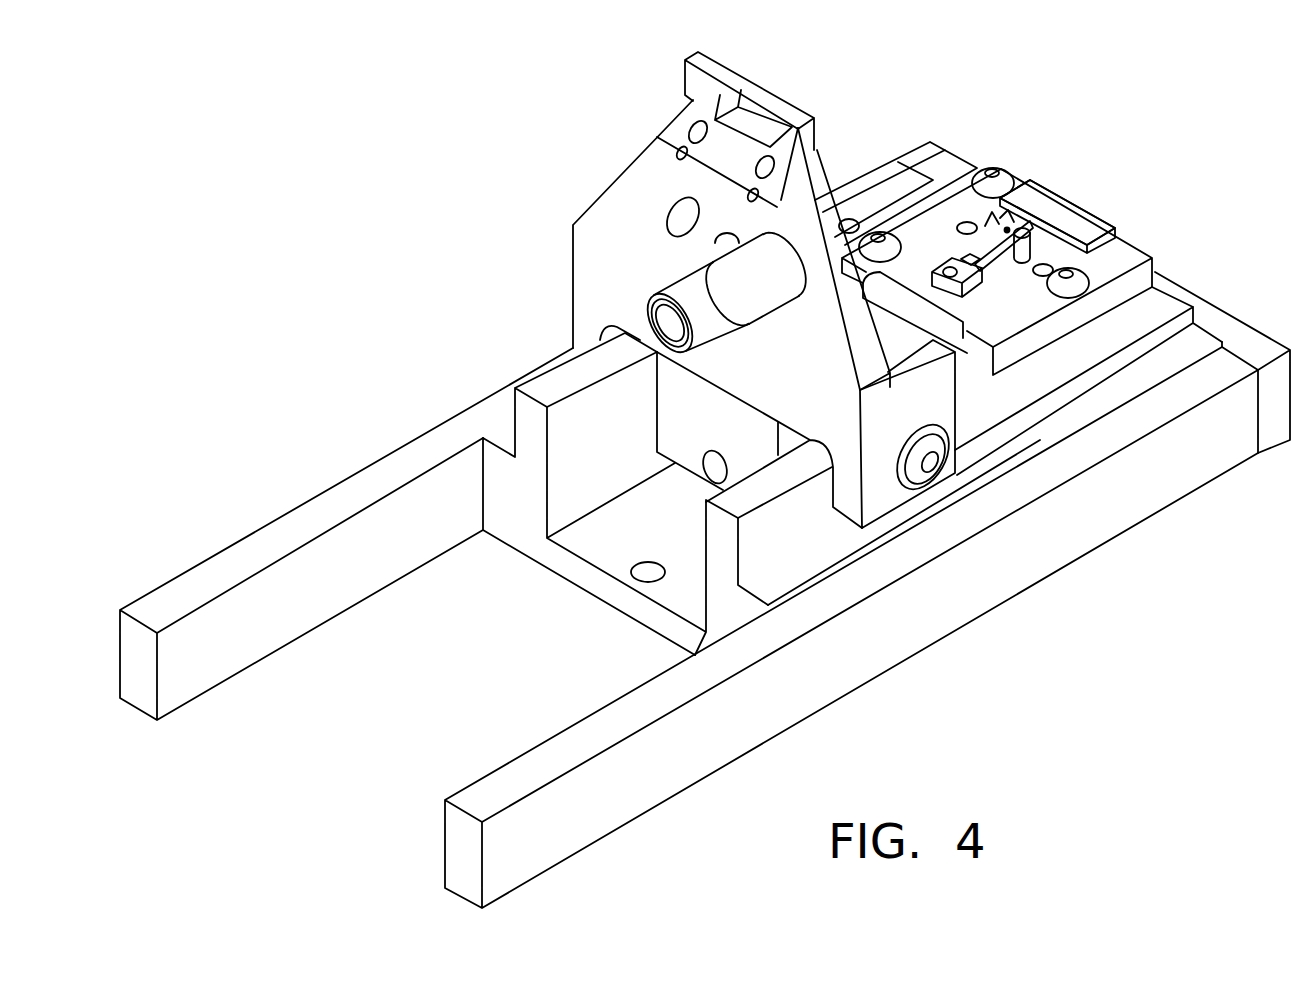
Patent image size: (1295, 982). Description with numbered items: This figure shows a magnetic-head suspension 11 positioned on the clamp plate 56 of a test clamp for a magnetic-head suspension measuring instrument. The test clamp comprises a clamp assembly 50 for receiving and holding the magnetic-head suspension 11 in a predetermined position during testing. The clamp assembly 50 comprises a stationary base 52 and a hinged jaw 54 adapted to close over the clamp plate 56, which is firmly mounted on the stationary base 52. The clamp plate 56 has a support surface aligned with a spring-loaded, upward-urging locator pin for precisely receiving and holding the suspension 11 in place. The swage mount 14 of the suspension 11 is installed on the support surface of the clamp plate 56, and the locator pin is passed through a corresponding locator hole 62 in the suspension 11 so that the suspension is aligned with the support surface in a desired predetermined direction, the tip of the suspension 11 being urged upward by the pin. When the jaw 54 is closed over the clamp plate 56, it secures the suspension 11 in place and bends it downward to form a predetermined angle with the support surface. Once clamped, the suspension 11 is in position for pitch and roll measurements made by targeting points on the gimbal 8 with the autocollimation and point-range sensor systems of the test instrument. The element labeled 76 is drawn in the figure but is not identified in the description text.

The clamp assembly 50 is at (1010, 142).
The stationary base 52 is at (1022, 556).
The hinged jaw 54 is at (603, 185).
The clamp plate 56 is at (1117, 260).
The clamp block 76 is at (1097, 207).
The gimbal 8 is at (1043, 202).
The swage mount 14 is at (943, 270).
The magnetic-head suspension 11 is at (997, 257).
The locator hole 62 is at (1007, 229).